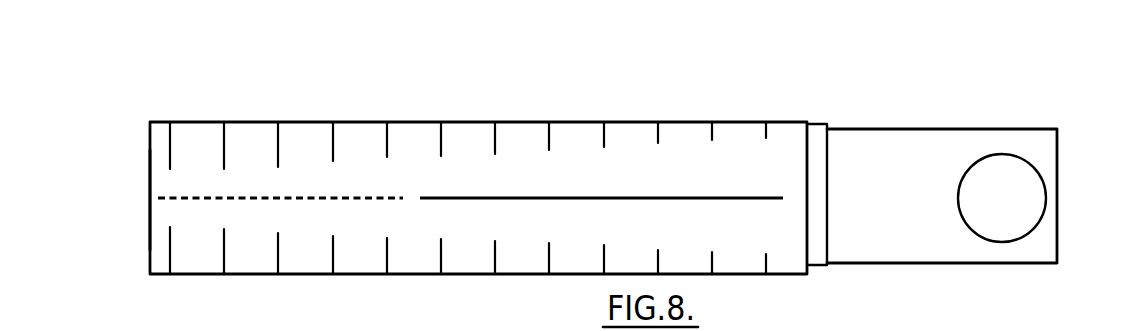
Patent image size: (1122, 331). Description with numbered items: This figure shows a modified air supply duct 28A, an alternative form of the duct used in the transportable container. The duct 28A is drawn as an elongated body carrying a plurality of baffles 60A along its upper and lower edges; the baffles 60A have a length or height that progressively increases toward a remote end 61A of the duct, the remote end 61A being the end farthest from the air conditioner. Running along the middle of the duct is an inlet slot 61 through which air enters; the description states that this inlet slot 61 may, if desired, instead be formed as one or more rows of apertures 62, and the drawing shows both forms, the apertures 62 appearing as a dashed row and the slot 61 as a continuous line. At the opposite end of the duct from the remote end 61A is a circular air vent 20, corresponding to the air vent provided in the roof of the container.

The modified air supply duct 28A is at (627, 84).
The baffles 60A is at (497, 133).
The rows of apertures 62 is at (325, 198).
The inlet slot 61 is at (681, 193).
The remote end 61A is at (148, 199).
The air vent 20 is at (1025, 194).